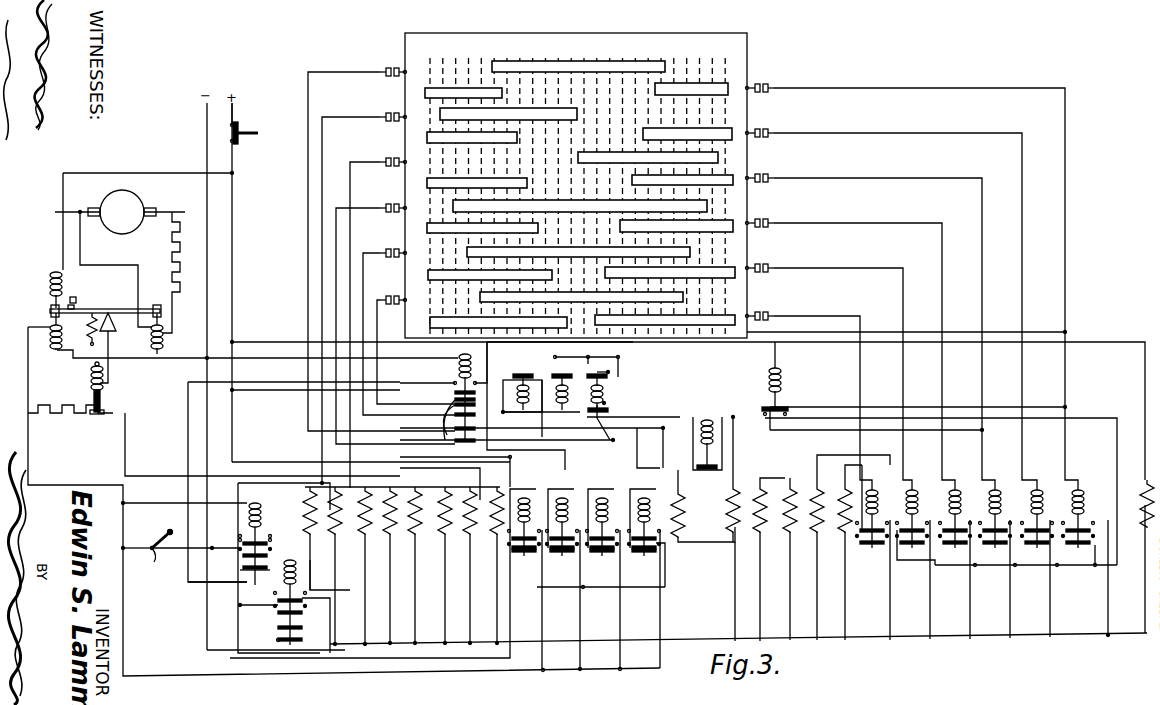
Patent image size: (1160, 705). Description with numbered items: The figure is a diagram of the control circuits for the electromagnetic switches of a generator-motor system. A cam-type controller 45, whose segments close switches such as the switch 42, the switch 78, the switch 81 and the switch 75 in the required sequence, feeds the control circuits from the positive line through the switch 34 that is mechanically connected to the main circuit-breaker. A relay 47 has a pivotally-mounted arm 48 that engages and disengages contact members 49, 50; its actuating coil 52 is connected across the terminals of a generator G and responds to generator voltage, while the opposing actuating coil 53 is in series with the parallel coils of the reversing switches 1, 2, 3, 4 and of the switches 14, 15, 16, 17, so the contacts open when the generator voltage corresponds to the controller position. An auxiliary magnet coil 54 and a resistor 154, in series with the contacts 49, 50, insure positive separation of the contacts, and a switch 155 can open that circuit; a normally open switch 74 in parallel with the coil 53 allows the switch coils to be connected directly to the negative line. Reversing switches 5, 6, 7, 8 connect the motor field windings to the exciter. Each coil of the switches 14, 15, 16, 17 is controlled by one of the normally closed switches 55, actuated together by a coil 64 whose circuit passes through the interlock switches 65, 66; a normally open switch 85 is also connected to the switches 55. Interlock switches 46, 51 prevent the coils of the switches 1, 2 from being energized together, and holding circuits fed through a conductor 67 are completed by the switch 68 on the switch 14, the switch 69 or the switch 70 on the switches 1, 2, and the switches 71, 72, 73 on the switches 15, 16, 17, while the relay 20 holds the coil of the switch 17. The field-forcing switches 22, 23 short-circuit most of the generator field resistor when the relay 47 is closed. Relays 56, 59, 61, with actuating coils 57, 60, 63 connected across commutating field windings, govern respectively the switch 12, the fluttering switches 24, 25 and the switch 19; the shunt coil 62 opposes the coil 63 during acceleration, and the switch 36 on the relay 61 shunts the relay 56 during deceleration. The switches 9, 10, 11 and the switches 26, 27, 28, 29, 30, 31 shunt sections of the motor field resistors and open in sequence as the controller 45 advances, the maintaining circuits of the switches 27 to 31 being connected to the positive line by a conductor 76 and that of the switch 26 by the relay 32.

The controller 45 is at (598, 23).
The switch 42 is at (392, 103).
The switch 78 is at (388, 150).
The switch 81 is at (390, 196).
The switch 75 is at (768, 84).
The switch 34 is at (233, 135).
The generator G is at (120, 261).
The auxiliary stationary magnet coil 54 is at (52, 276).
The relay 47 is at (50, 308).
The contact member 49 is at (74, 300).
The contact member 50 is at (76, 307).
The pivotally-mounted arm 48 is at (148, 305).
The actuating coil 52 is at (164, 328).
The actuating coil 53 is at (50, 357).
The switch 155 is at (104, 402).
The resistor 154 is at (60, 417).
The coil 64 is at (459, 366).
The switch 85 is at (455, 392).
The switches 55 is at (446, 442).
The relay 56 is at (520, 377).
The actuating coil 57 is at (530, 414).
The relay 59 is at (558, 360).
The actuating coil 60 is at (574, 414).
The relay 61 is at (608, 364).
The shunt coil 62 is at (610, 377).
The actuating coil 63 is at (606, 403).
The switch 36 is at (608, 442).
The conductor 67 is at (532, 460).
The relay 20 is at (725, 456).
The relay 32 is at (780, 391).
The electromagnetic switch 2 is at (256, 510).
The electromagnetic switch 1 is at (304, 572).
The switch 46 is at (244, 534).
The switch 66 is at (242, 578).
The switch 70 is at (254, 582).
The switch 51 is at (278, 606).
The switch 65 is at (302, 618).
The switch 69 is at (278, 640).
The switch 74 is at (161, 556).
The electromagnetic switch 3 is at (304, 506).
The electromagnetic switch 4 is at (336, 535).
The reversing switch 5 is at (366, 535).
The reversing switch 6 is at (391, 535).
The reversing switch 7 is at (416, 535).
The reversing switch 8 is at (446, 535).
The field-forcing switch 22 is at (471, 535).
The field-forcing switch 23 is at (497, 548).
The electromagnetic switch 14 is at (524, 497).
The electromagnetic switch 15 is at (563, 496).
The electromagnetic switch 16 is at (604, 496).
The electromagnetic switch 17 is at (646, 498).
The switch 68 is at (526, 556).
The switch 71 is at (563, 552).
The switch 72 is at (604, 554).
The switch 73 is at (652, 550).
The switch 12 is at (682, 492).
The electromagnetic switch 24 is at (732, 530).
The electromagnetic switch 25 is at (760, 530).
The electromagnetic switch 9 is at (792, 532).
The electromagnetic switch 10 is at (818, 532).
The electromagnetic switch 11 is at (846, 532).
The electromagnet switch 19 is at (1146, 486).
The electromagnetic switch 31 is at (878, 488).
The electromagnetic switch 30 is at (918, 488).
The electromagnetic switch 29 is at (956, 488).
The electromagnetic switch 28 is at (996, 488).
The electromagnetic switch 27 is at (1038, 488).
The electromagnetic switch 26 is at (1082, 490).
The conductor 76 is at (1108, 548).